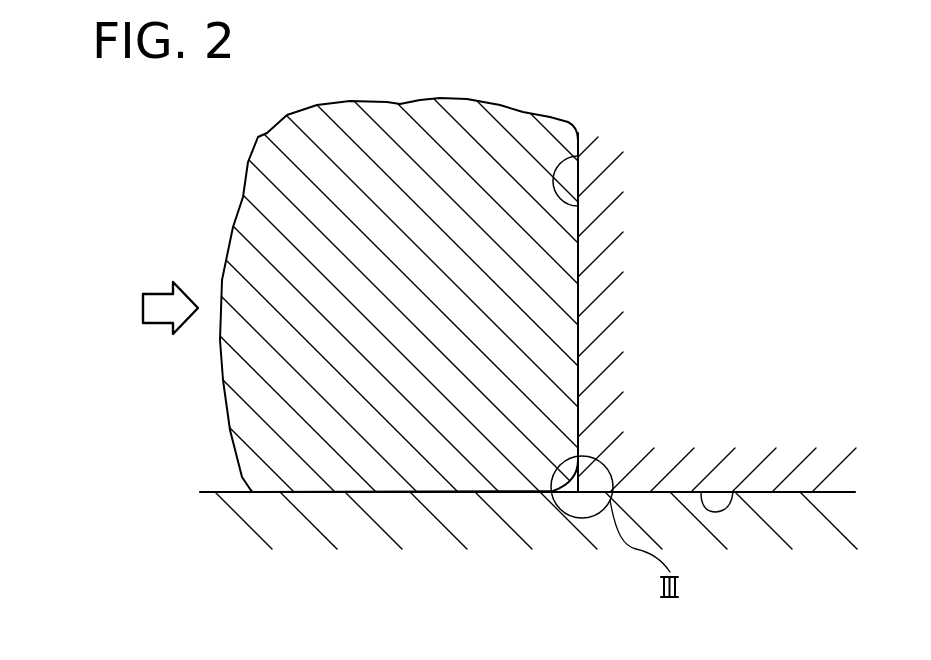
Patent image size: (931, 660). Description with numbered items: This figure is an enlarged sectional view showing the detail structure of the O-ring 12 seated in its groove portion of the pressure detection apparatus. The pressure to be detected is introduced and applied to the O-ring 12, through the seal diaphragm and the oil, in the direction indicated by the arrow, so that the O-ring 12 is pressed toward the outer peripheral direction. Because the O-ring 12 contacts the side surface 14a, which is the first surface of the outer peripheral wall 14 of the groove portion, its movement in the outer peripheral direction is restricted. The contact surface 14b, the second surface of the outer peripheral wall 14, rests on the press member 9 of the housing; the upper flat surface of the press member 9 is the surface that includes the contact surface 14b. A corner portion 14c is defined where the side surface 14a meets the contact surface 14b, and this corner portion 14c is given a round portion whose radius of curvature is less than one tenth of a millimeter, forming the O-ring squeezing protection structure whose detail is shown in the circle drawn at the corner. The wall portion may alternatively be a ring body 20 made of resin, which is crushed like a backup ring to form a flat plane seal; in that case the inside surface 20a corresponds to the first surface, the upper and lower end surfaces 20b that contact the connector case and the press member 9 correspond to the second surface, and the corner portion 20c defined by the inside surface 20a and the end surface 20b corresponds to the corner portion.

The press member 9 is at (307, 532).
The O-ring 12 is at (262, 137).
The outer peripheral wall 14 is at (717, 312).
The ring body 20 is at (608, 227).
The side surface 14a is at (642, 146).
The inside surface 20a is at (580, 153).
The contact surface 14b is at (755, 450).
The end surface 20b is at (733, 492).
The corner portion 14c is at (562, 530).
The corner portion 20c is at (567, 517).